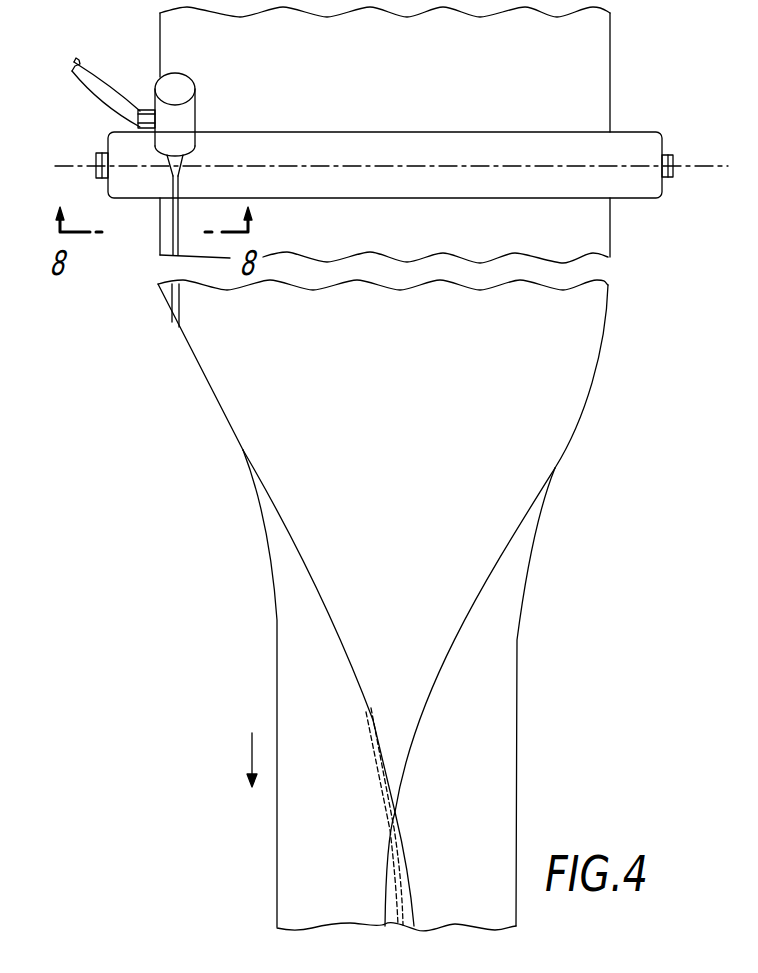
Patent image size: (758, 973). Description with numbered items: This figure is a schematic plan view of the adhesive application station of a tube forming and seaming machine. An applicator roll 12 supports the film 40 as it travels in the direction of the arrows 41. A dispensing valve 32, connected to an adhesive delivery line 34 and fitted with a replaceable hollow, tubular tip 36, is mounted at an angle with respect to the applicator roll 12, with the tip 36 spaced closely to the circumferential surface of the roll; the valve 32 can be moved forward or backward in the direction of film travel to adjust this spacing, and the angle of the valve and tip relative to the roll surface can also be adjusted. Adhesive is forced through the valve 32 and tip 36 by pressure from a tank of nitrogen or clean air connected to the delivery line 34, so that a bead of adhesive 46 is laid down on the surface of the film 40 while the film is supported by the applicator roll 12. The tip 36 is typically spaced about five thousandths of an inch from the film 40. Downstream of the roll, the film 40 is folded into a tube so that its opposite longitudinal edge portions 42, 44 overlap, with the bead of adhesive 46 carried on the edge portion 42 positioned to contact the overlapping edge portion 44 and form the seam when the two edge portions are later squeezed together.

The applicator roll 12 is at (642, 150).
The dispensing valve 32 is at (178, 83).
The adhesive delivery line 34 is at (86, 99).
The hollow, tubular tip 36 is at (182, 164).
The film 40 is at (393, 413).
The arrows 41 is at (250, 750).
The edge portion 42 is at (316, 583).
The edge portion 44 is at (452, 640).
The bead of adhesive 46 is at (167, 236).